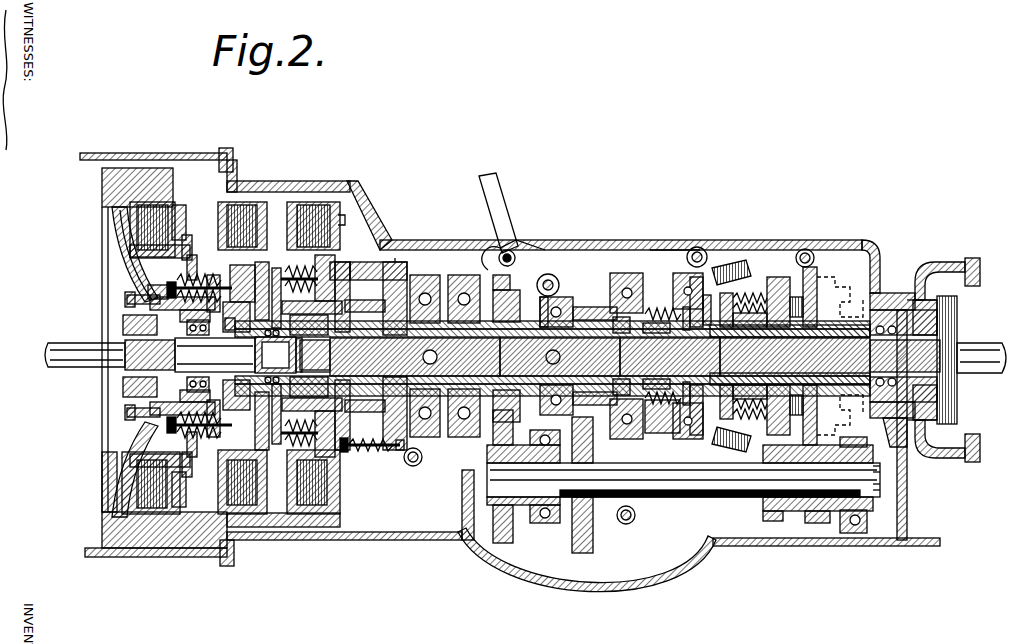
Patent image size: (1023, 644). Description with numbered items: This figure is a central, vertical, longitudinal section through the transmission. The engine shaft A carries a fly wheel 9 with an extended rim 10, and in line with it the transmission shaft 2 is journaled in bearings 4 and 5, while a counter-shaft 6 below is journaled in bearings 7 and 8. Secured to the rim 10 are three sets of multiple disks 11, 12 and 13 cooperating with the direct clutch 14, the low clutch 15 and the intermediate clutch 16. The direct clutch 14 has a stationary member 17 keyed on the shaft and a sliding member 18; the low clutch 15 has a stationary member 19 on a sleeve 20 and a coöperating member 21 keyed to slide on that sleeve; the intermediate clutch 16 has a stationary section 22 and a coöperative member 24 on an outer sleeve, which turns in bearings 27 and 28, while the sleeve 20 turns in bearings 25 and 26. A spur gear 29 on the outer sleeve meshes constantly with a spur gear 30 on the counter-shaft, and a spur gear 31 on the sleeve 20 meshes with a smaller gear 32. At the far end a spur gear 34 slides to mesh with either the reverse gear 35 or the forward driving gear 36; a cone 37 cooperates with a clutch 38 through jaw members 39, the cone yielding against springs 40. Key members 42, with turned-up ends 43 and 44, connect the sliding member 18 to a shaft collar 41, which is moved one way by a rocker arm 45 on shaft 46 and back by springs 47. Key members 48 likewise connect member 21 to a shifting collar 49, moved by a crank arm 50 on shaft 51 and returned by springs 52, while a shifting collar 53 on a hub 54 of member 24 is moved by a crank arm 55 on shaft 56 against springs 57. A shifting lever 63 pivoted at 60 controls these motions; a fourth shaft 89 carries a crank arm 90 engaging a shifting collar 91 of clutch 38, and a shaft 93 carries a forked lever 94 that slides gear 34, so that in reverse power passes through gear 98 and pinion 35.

The engine shaft A is at (85, 374).
The transmission shaft 2 is at (275, 355).
The bearing 4 is at (938, 356).
The bearing 5 is at (167, 355).
The counter-shaft 6 is at (683, 480).
The bearing 7 is at (848, 485).
The bearing 8 is at (523, 483).
The fly wheel 9 is at (201, 358).
The extended rim 10 is at (288, 172).
The multiple disks 11 is at (126, 355).
The multiple disks 12 is at (242, 226).
The multiple disks 13 is at (313, 226).
The direct clutch 14 is at (108, 255).
The low clutch 15 is at (242, 226).
The intermediate clutch 16 is at (313, 226).
The stationary member 17 is at (155, 281).
The sliding member 18 is at (190, 356).
The stationary member 19 is at (242, 283).
The sleeve 20 is at (329, 362).
The coöperating member 21 is at (313, 286).
The stationary section 22 is at (587, 201).
The coöperative member 24 is at (358, 238).
The bearing 25 is at (215, 355).
The bearing 26 is at (560, 357).
The bearing 27 is at (354, 467).
The bearing 28 is at (552, 358).
The spur gear 29 is at (513, 344).
The spur gear 30 is at (467, 505).
The spur gear 31 is at (595, 343).
The gear 32 is at (604, 487).
The spur gear 34 is at (792, 326).
The reverse gear 35 is at (790, 355).
The forward driving gear 36 is at (753, 520).
The cone 37 is at (714, 326).
The clutch 38 is at (731, 351).
The jaw members 39 is at (708, 310).
The springs 40 is at (750, 343).
The shaft collar 41 is at (636, 285).
The key members 42 is at (259, 348).
The turned-up end 43 is at (240, 313).
The turned-up end 44 is at (670, 357).
The rocker arm 45 is at (645, 429).
The shaft 46 is at (643, 516).
The springs 47 is at (139, 345).
The key members 48 is at (313, 355).
The shifting collar 49 is at (567, 339).
The crank arm 50 is at (573, 269).
The shaft 51 is at (554, 258).
The springs 52 is at (352, 357).
The shifting collar 53 is at (445, 328).
The hub 54 is at (406, 335).
The crank arm 55 is at (426, 458).
The shaft 56 is at (411, 468).
The springs 57 is at (392, 342).
The pivot 60 is at (514, 233).
The shifting lever 63 is at (495, 213).
The fourth shaft 89 is at (693, 240).
The crank arm 90 is at (669, 232).
The shifting collar 91 is at (665, 343).
The shaft 93 is at (825, 240).
The forked lever 94 is at (840, 344).
The gear 98 is at (830, 541).